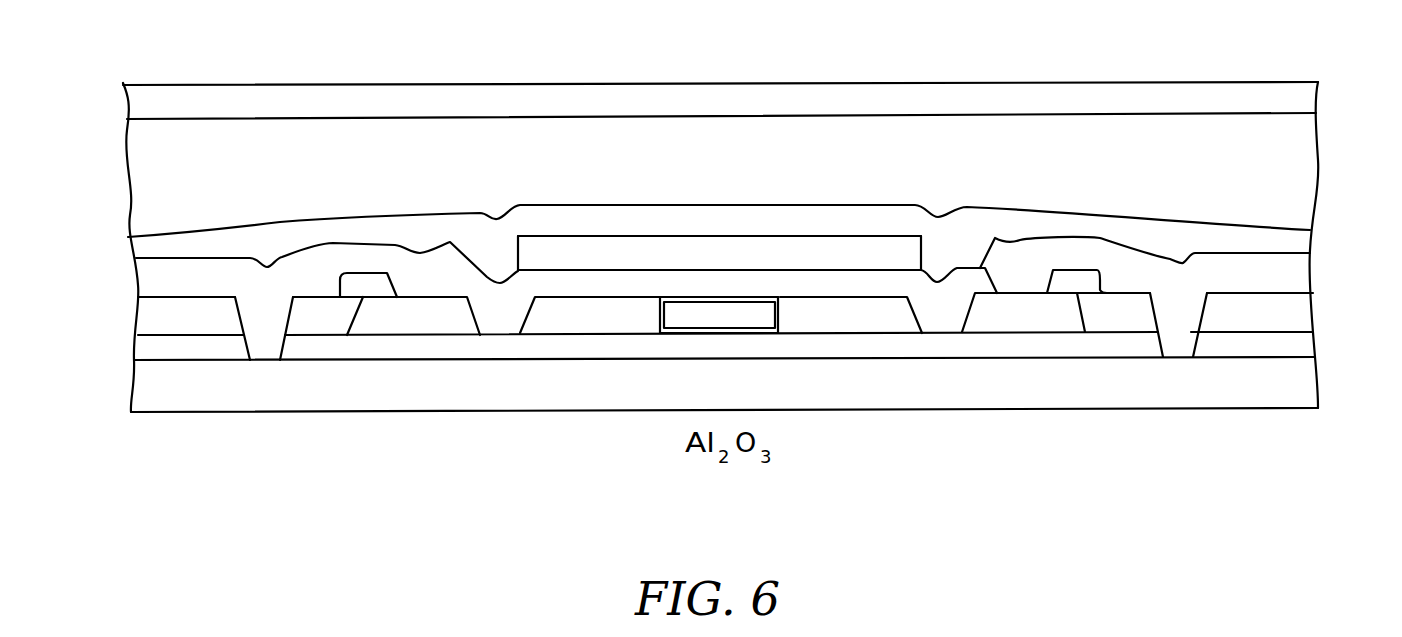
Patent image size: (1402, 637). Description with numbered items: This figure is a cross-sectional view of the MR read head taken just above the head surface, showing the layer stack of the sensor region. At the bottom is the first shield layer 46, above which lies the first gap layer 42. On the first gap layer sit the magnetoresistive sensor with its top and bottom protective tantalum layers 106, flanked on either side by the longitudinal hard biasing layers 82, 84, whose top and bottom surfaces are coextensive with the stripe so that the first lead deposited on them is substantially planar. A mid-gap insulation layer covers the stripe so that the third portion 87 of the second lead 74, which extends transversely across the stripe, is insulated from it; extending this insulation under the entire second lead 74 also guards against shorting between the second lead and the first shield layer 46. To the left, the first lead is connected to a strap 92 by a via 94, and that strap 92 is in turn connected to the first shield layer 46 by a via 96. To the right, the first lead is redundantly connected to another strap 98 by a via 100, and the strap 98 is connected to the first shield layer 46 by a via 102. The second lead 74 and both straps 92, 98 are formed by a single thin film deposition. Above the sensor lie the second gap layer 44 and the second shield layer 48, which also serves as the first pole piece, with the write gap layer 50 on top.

The first gap layer 42 is at (962, 345).
The second gap layer 44 is at (1260, 240).
The first shield layer 46 is at (1282, 375).
The second shield layer 48 is at (1260, 180).
The gap layer 50 is at (1287, 102).
The second lead 74 is at (855, 232).
The longitudinal hard biasing layer 82 is at (548, 315).
The longitudinal hard biasing layer 84 is at (892, 318).
The third portion 87 is at (580, 257).
The strap 92 is at (337, 265).
The via 94 is at (417, 277).
The via 96 is at (260, 327).
The strap 98 is at (1157, 265).
The via 100 is at (1020, 278).
The via 102 is at (1173, 340).
The protective tantalum layers 106 is at (763, 298).